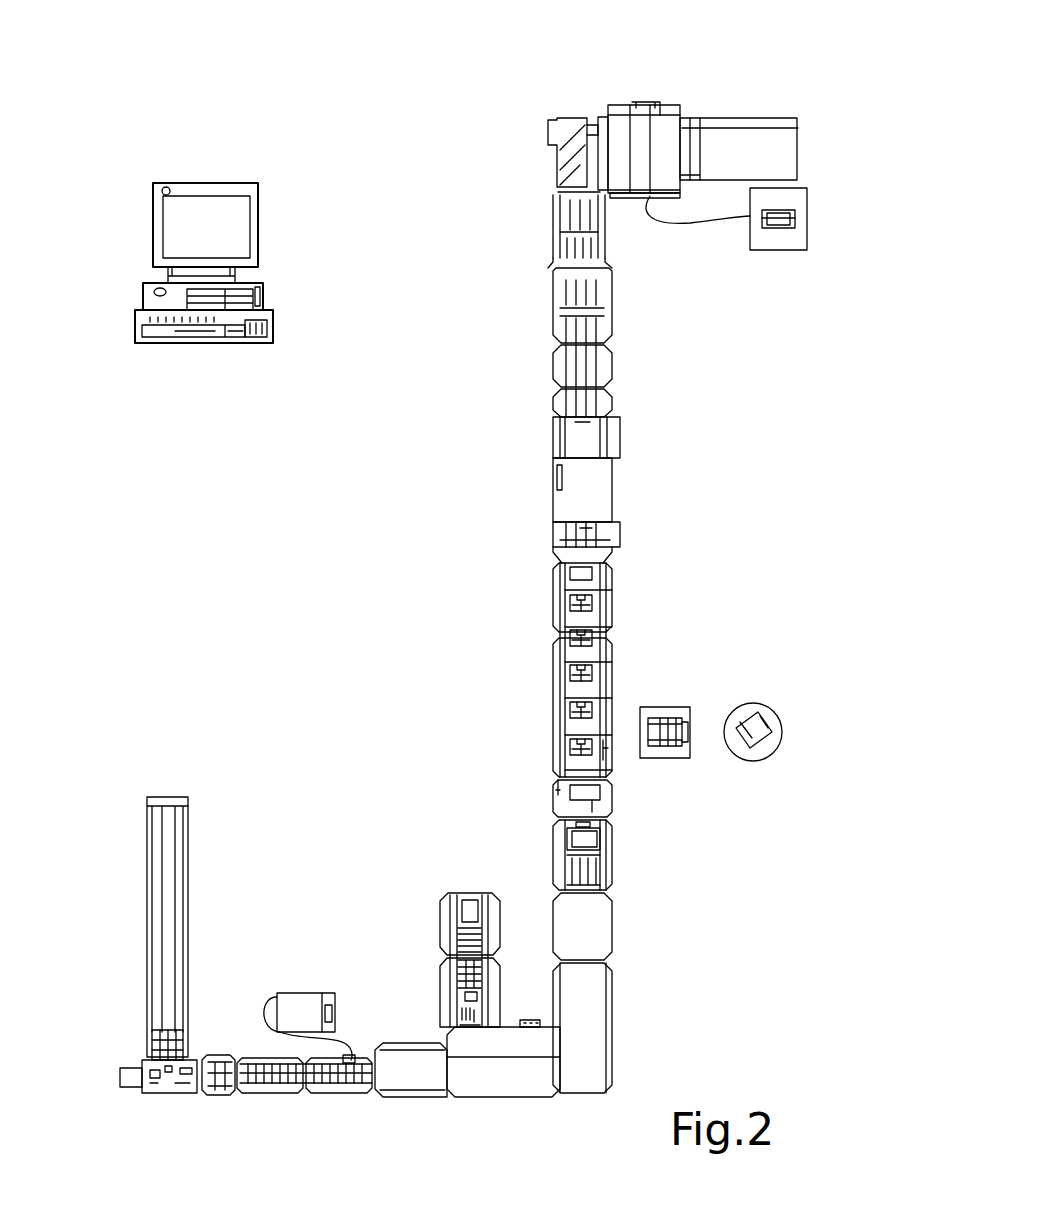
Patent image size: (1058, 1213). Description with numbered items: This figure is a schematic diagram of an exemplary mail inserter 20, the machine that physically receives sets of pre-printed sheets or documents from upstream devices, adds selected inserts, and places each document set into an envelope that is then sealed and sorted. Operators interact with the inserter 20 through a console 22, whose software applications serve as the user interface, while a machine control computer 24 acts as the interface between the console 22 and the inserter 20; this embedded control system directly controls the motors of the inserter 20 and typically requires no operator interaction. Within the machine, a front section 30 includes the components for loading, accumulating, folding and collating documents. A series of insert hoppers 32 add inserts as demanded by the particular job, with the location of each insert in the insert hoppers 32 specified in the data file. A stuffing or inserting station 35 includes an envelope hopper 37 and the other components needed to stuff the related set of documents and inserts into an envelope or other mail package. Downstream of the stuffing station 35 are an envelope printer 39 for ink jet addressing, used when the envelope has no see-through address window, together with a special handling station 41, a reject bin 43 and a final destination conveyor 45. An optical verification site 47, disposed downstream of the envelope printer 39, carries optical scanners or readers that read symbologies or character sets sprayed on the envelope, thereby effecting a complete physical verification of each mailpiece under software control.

The inserter 20 is at (318, 152).
The console 22 is at (153, 222).
The machine control computer 24 is at (745, 703).
The front section 30 is at (540, 555).
The insert hoppers 32 is at (612, 697).
The stuffing or inserting station 35 is at (625, 897).
The envelope hopper 37 is at (472, 893).
The envelope printer 39 is at (300, 993).
The special handling station 41 is at (217, 1097).
The reject bin 43 is at (120, 1075).
The final destination conveyor 45 is at (147, 880).
The optical verification site 47 is at (262, 1097).